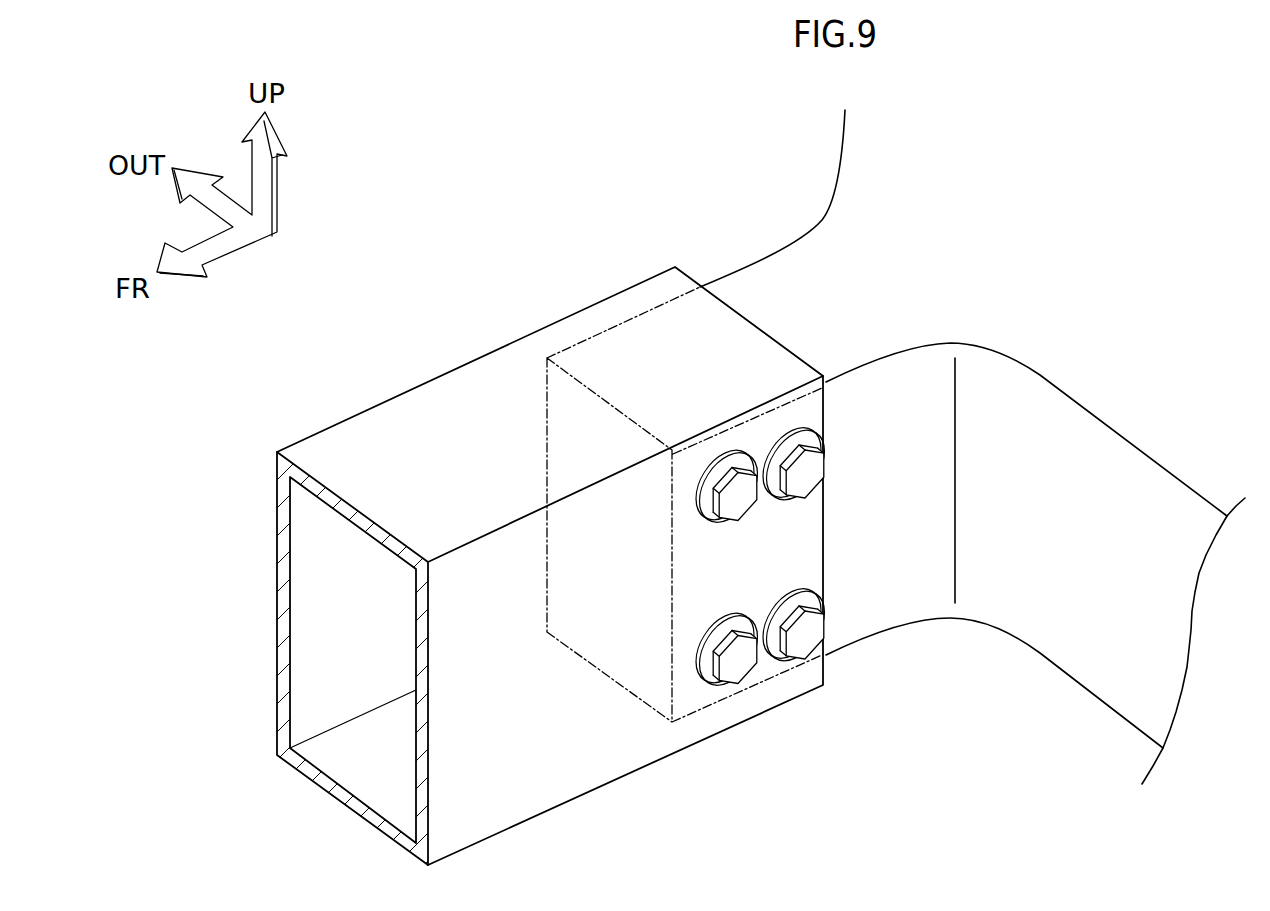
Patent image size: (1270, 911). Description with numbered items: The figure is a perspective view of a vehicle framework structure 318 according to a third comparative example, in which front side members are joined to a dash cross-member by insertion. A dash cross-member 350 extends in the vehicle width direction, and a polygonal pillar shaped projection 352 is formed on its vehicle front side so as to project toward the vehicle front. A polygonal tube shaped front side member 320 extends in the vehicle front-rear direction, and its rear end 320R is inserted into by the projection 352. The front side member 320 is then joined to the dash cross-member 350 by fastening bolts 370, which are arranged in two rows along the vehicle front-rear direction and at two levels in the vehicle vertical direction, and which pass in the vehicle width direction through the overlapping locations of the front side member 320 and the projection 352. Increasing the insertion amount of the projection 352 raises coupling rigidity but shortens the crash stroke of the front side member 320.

The vehicle framework structure 318 is at (680, 146).
The front side member 320 is at (581, 803).
The rear end 320R is at (668, 740).
The dash cross-member 350 is at (820, 218).
The projection 352 is at (735, 288).
The bolt 370 is at (802, 482).